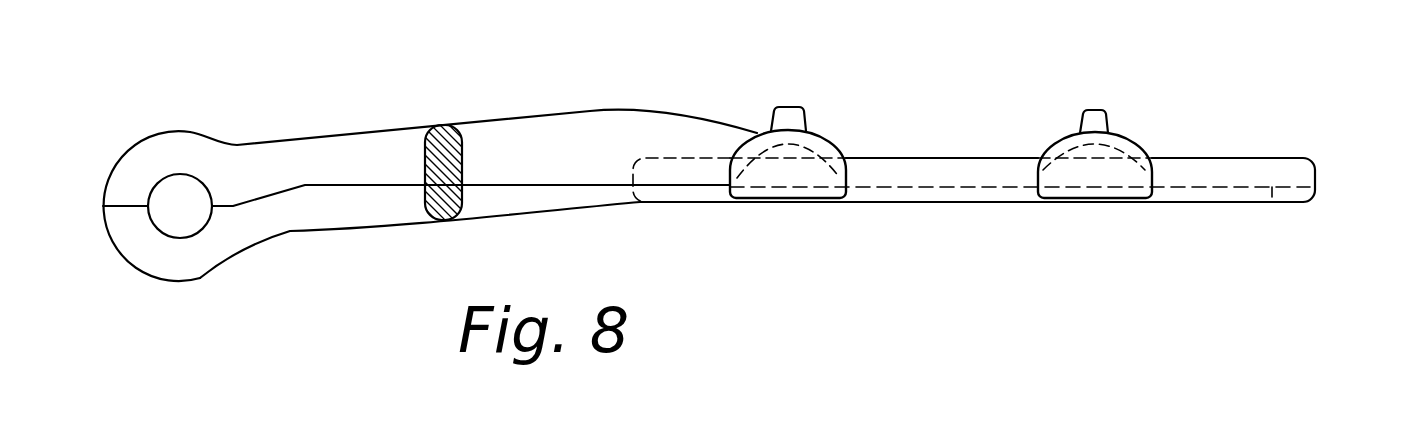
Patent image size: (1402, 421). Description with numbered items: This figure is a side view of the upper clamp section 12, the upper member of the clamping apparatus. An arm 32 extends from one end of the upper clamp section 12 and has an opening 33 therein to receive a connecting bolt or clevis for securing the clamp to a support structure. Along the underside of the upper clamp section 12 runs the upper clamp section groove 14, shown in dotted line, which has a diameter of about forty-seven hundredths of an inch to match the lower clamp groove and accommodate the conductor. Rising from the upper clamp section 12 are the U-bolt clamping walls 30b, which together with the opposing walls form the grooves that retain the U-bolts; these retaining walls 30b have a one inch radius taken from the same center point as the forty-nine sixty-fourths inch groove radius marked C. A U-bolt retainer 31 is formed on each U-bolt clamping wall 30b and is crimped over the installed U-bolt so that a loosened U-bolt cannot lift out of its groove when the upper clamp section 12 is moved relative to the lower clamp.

The upper clamp section 12 is at (1270, 170).
The upper clamp section groove 14 is at (1273, 207).
The U-bolt clamping wall 30b is at (1130, 145).
The U-bolt retainer 31 is at (1092, 118).
The arm 32 is at (265, 160).
The opening 33 is at (180, 175).
The radius C is at (823, 157).